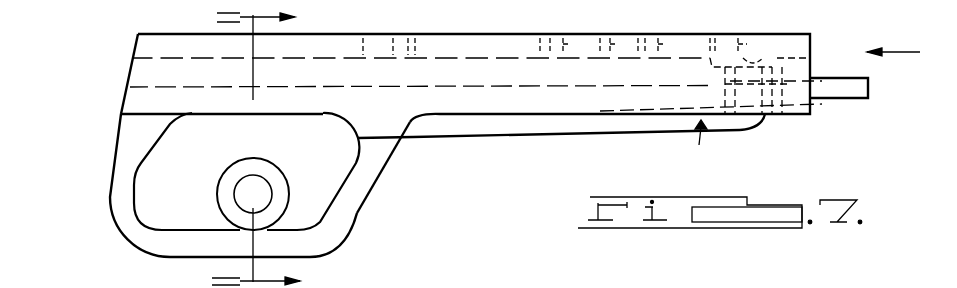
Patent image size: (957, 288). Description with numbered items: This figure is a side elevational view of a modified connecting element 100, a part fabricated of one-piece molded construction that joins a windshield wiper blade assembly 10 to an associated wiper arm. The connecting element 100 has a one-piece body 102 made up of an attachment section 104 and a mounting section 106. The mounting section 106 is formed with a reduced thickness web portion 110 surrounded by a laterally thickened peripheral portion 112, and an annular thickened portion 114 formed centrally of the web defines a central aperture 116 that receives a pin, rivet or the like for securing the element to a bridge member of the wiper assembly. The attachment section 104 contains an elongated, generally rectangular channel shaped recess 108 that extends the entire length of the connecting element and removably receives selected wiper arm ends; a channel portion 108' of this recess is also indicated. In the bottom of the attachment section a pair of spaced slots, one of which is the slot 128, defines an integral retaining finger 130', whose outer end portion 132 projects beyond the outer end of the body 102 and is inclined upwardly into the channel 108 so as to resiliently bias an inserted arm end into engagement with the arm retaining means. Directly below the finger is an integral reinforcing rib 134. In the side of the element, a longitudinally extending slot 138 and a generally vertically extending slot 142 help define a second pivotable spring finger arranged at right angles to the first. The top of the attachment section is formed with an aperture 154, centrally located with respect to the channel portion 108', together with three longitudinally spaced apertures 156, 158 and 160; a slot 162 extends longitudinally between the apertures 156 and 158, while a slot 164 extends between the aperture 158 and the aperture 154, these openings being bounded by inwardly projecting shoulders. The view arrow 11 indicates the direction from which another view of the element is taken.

The blade assembly 10 is at (280, 144).
The view direction 11 is at (900, 29).
The connecting element 100 is at (110, 63).
The one-piece body 102 is at (407, 118).
The attachment section 104 is at (488, 41).
The mounting section 106 is at (116, 219).
The channel shaped recess 108 is at (476, 127).
The channel portion 108' is at (548, 265).
The web portion 110 is at (160, 172).
The peripheral portion 112 is at (353, 210).
The annular thickened portion 114 is at (296, 165).
The central aperture 116 is at (243, 193).
The elongated slot 128 is at (701, 279).
The slide stop 130' is at (677, 150).
The outer end portion 132 is at (853, 98).
The reinforcing rib 134 is at (571, 126).
The longitudinally extending slot 138 is at (772, 58).
The vertically extending slot 142 is at (772, 120).
The aperture 154 is at (667, 57).
The aperture 156 is at (365, 45).
The aperture 158 is at (572, 34).
The aperture 160 is at (741, 37).
The slot 162 is at (417, 52).
The slot 164 is at (610, 44).